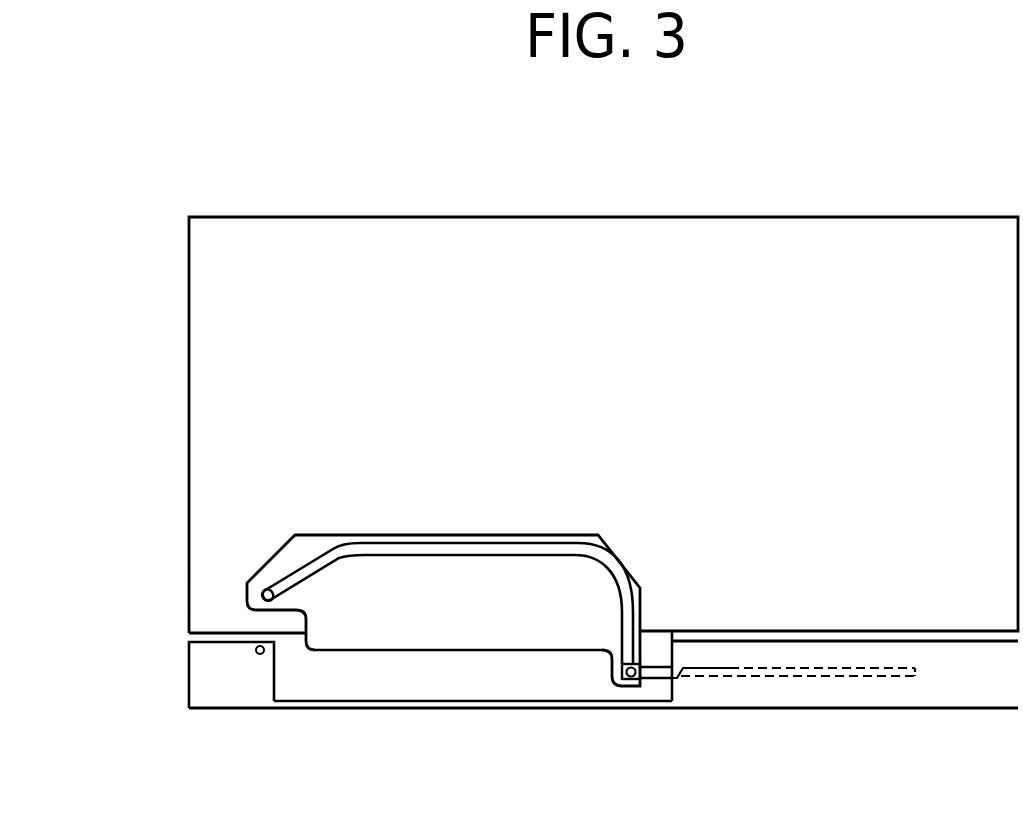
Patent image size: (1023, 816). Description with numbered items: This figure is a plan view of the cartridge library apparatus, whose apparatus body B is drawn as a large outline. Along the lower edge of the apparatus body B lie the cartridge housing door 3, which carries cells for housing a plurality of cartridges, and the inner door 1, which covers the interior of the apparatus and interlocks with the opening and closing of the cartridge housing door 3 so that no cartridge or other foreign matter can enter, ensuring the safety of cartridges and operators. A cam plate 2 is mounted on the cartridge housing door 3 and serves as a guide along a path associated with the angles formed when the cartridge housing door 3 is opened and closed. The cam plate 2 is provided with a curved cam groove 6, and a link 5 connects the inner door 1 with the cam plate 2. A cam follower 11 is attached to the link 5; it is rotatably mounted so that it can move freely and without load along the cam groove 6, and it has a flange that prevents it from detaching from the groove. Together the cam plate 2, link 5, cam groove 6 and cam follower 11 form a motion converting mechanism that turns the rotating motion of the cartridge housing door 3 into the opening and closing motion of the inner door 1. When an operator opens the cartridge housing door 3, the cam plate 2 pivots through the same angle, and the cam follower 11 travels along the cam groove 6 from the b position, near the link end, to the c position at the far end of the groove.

The apparatus body B is at (640, 250).
The cam groove 6 is at (502, 553).
The c position c is at (273, 597).
The cam plate 2 is at (453, 632).
The cartridge housing door 3 is at (233, 710).
The link 5 is at (655, 668).
The cam follower 11 is at (632, 679).
The b position b is at (612, 668).
The inner door 1 is at (858, 672).